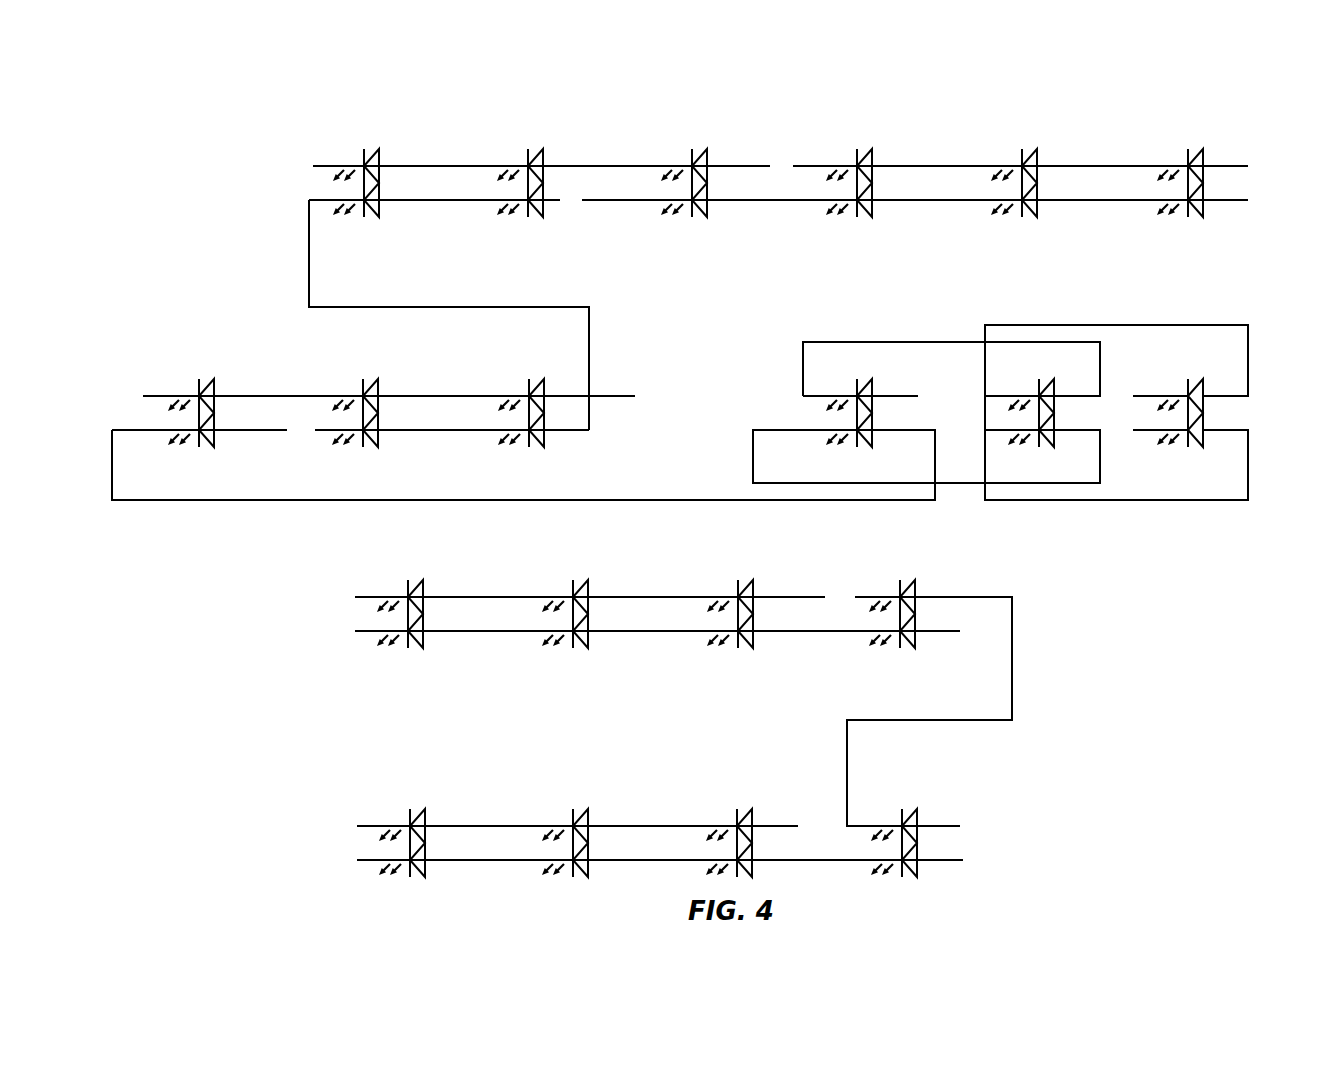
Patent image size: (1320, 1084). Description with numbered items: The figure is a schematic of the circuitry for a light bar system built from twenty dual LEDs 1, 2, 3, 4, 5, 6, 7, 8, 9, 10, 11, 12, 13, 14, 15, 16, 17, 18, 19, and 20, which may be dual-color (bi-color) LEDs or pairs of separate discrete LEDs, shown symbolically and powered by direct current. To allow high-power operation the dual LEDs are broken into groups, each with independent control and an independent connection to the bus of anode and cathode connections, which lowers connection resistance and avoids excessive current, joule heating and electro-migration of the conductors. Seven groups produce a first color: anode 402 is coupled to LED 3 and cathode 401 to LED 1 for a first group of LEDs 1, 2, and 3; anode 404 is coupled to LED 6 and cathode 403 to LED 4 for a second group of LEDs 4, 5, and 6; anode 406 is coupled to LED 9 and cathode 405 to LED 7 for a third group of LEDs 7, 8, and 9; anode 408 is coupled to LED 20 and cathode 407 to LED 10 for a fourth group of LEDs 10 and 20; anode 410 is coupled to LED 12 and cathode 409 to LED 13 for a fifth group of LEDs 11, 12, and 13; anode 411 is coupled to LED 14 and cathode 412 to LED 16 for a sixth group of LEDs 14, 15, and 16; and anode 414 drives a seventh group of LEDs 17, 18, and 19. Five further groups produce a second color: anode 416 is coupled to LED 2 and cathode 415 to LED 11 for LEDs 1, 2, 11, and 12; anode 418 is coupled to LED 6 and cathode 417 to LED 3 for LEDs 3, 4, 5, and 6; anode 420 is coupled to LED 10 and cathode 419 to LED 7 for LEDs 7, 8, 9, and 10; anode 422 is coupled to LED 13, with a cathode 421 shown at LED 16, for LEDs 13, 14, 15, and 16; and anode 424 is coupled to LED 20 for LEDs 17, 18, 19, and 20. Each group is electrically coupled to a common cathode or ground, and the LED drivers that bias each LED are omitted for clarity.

The dual LED 1 is at (381, 152).
The dual LED 2 is at (545, 152).
The dual LED 3 is at (709, 152).
The dual LED 4 is at (874, 152).
The dual LED 5 is at (1039, 152).
The dual LED 6 is at (1205, 152).
The dual LED 7 is at (425, 583).
The dual LED 8 is at (590, 583).
The dual LED 9 is at (755, 583).
The dual LED 10 is at (917, 583).
The dual LED 11 is at (380, 382).
The dual LED 12 is at (546, 382).
The dual LED 13 is at (216, 382).
The dual LED 14 is at (874, 382).
The dual LED 15 is at (1056, 382).
The dual LED 16 is at (1205, 382).
The dual LED 17 is at (427, 812).
The dual LED 18 is at (590, 812).
The dual LED 19 is at (754, 812).
The dual LED 20 is at (919, 812).
The cathode 401 is at (321, 166).
The anode 402 is at (745, 166).
The cathode 403 is at (748, 200).
The anode 404 is at (1233, 166).
The cathode 405 is at (362, 597).
The anode 406 is at (815, 597).
The cathode 407 is at (782, 633).
The anode 408 is at (946, 826).
The cathode 409 is at (158, 395).
The anode 410 is at (620, 398).
The anode 411 is at (893, 595).
The cathode 412 is at (1148, 395).
The anode 414 is at (780, 826).
The cathode 415 is at (330, 432).
The anode 416 is at (553, 203).
The cathode 417 is at (585, 203).
The anode 418 is at (1225, 203).
The cathode 419 is at (362, 630).
The anode 420 is at (935, 633).
The conductor line 421 is at (1148, 432).
The anode 422 is at (262, 432).
The anode 424 is at (942, 862).